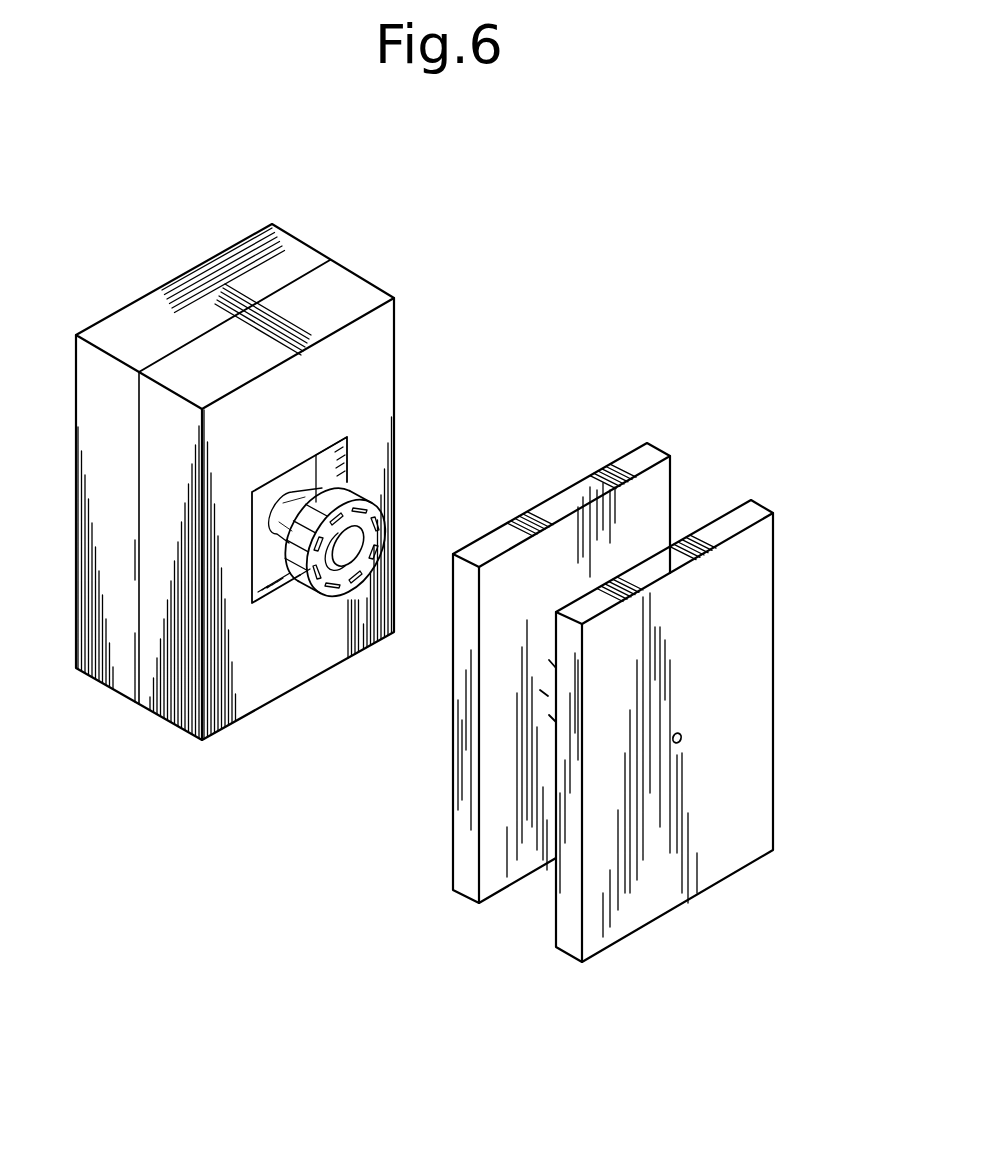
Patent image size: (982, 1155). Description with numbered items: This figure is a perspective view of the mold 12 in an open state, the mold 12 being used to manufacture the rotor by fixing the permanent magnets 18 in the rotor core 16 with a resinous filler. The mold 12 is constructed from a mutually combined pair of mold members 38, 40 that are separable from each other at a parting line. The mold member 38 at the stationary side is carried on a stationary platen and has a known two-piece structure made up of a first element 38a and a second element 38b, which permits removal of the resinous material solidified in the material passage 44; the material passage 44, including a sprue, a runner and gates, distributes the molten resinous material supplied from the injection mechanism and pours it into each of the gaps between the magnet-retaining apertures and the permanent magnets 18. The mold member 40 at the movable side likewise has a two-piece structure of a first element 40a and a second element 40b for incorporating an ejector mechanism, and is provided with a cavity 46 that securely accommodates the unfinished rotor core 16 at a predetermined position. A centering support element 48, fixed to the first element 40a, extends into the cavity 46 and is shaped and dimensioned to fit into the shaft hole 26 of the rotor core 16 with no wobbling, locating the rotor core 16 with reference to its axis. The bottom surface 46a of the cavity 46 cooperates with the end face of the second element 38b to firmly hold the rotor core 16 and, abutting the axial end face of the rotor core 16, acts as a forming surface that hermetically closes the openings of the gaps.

The mold 12 is at (630, 232).
The mold member 40 is at (488, 228).
The first element 40a is at (302, 232).
The second element 40b is at (372, 275).
The centering support element 48 is at (292, 493).
The permanent magnet 18 is at (393, 520).
The shaft hole 26 is at (352, 567).
The cavity 46 is at (273, 590).
The bottom surface 46a is at (268, 497).
The rotor core 16 is at (308, 597).
The mold member 38 is at (847, 435).
The first element 38a is at (753, 506).
The second element 38b is at (660, 448).
The material passage 44 is at (686, 738).